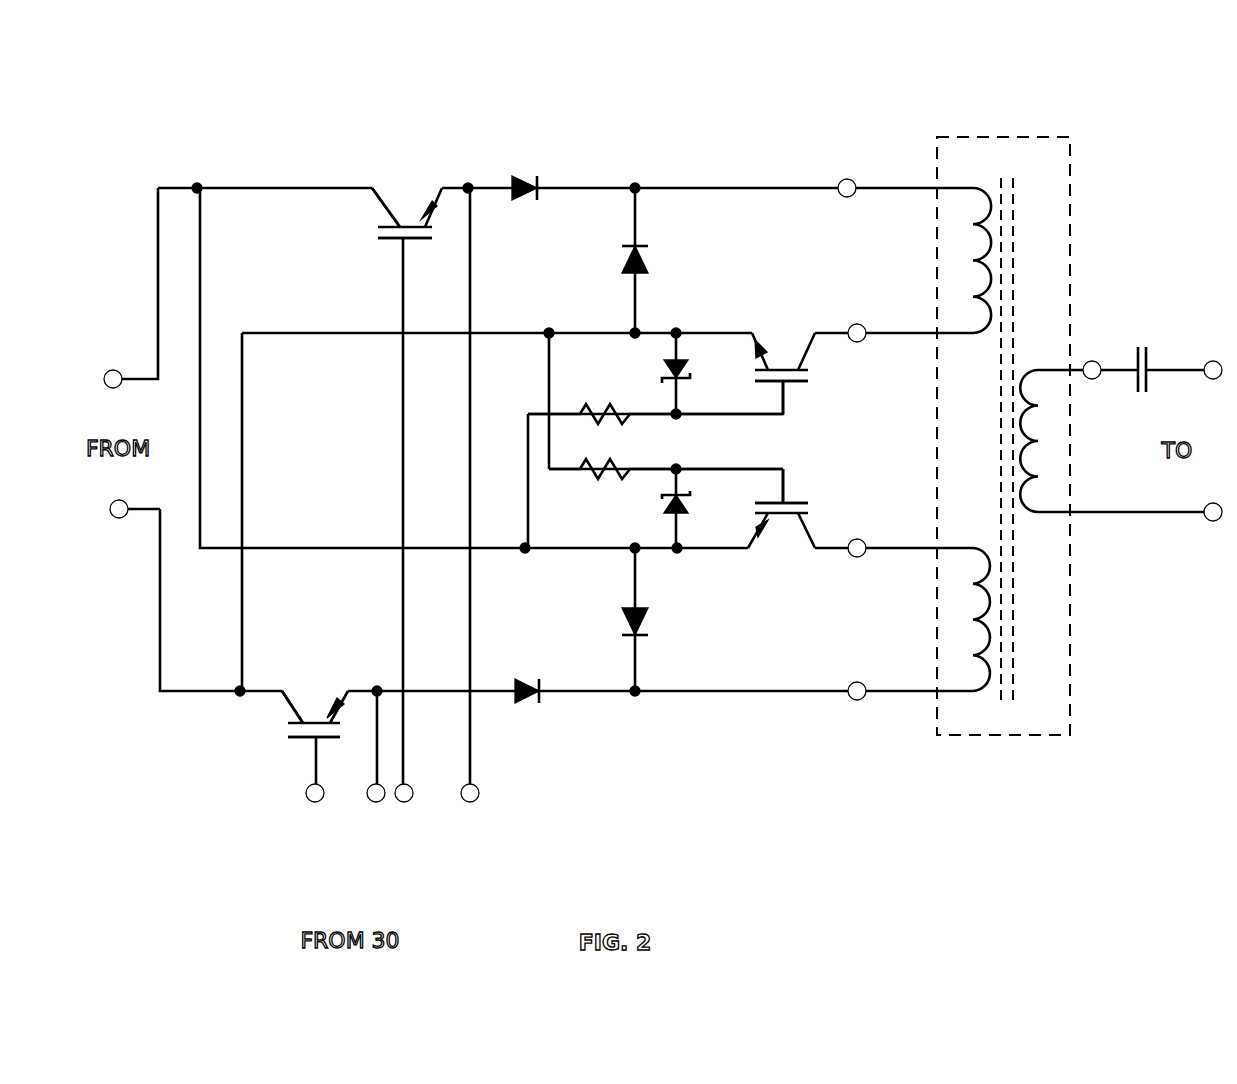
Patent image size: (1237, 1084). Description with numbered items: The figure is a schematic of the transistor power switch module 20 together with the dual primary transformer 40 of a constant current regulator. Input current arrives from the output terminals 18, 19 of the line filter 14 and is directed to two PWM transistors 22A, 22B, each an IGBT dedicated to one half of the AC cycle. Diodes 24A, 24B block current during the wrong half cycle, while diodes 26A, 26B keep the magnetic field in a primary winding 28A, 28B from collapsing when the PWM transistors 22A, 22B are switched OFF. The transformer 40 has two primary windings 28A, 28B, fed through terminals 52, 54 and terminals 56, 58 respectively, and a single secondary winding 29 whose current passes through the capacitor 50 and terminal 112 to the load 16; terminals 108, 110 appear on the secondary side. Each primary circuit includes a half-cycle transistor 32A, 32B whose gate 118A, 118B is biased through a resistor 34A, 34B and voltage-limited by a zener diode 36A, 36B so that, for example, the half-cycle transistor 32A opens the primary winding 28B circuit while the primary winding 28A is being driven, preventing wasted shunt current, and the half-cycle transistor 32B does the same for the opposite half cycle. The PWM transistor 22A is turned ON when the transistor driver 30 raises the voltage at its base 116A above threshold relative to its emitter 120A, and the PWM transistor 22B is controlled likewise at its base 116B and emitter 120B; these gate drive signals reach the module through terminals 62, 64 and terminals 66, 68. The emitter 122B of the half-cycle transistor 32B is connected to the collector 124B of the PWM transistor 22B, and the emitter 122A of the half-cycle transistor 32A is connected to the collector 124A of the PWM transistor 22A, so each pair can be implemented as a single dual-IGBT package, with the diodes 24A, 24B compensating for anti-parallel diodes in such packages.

The transistor power switch module 20 is at (330, 100).
The line filter 14 is at (104, 478).
The load 16 is at (1175, 480).
The output terminal of line filter 18 is at (112, 368).
The output terminal of line filter 19 is at (113, 520).
The PWM transistor 22A is at (366, 170).
The PWM transistor 22B is at (308, 688).
The diode 24A is at (513, 181).
The diode 24B is at (527, 706).
The diode 26A is at (626, 257).
The diode 26B is at (623, 622).
The primary winding 28A is at (983, 248).
The primary winding 28B is at (978, 635).
The secondary winding 29 is at (1027, 450).
The transistor driver 30 is at (385, 940).
The half-cycle transistor 32A is at (796, 560).
The half-cycle transistor 32B is at (803, 329).
The resistor 34A is at (600, 476).
The resistor 34B is at (655, 398).
The zener diode 36A is at (684, 546).
The zener diode 36B is at (679, 360).
The dual primary transformer 40 is at (1070, 158).
The capacitor 50 is at (1137, 360).
The terminal 52 is at (841, 181).
The terminal 54 is at (860, 343).
The terminal 56 is at (865, 540).
The terminal 58 is at (848, 700).
The terminal 62 is at (313, 803).
The terminal 64 is at (375, 803).
The terminal 66 is at (472, 803).
The terminal 68 is at (405, 803).
The secondary winding terminal 108 is at (1088, 362).
The output terminal 110 is at (1205, 528).
The terminal 112 is at (1210, 360).
The base 116A is at (392, 240).
The emitter of transistor 22B 116B is at (318, 733).
The gate 118A is at (788, 503).
The collector of transistor 32B 118B is at (788, 368).
The emitter 120A is at (418, 205).
The collector of transistor 22B 120B is at (336, 705).
The emitter 122A is at (762, 553).
The emitter 122B is at (759, 345).
The collector 124A is at (385, 206).
The collector 124B is at (310, 697).